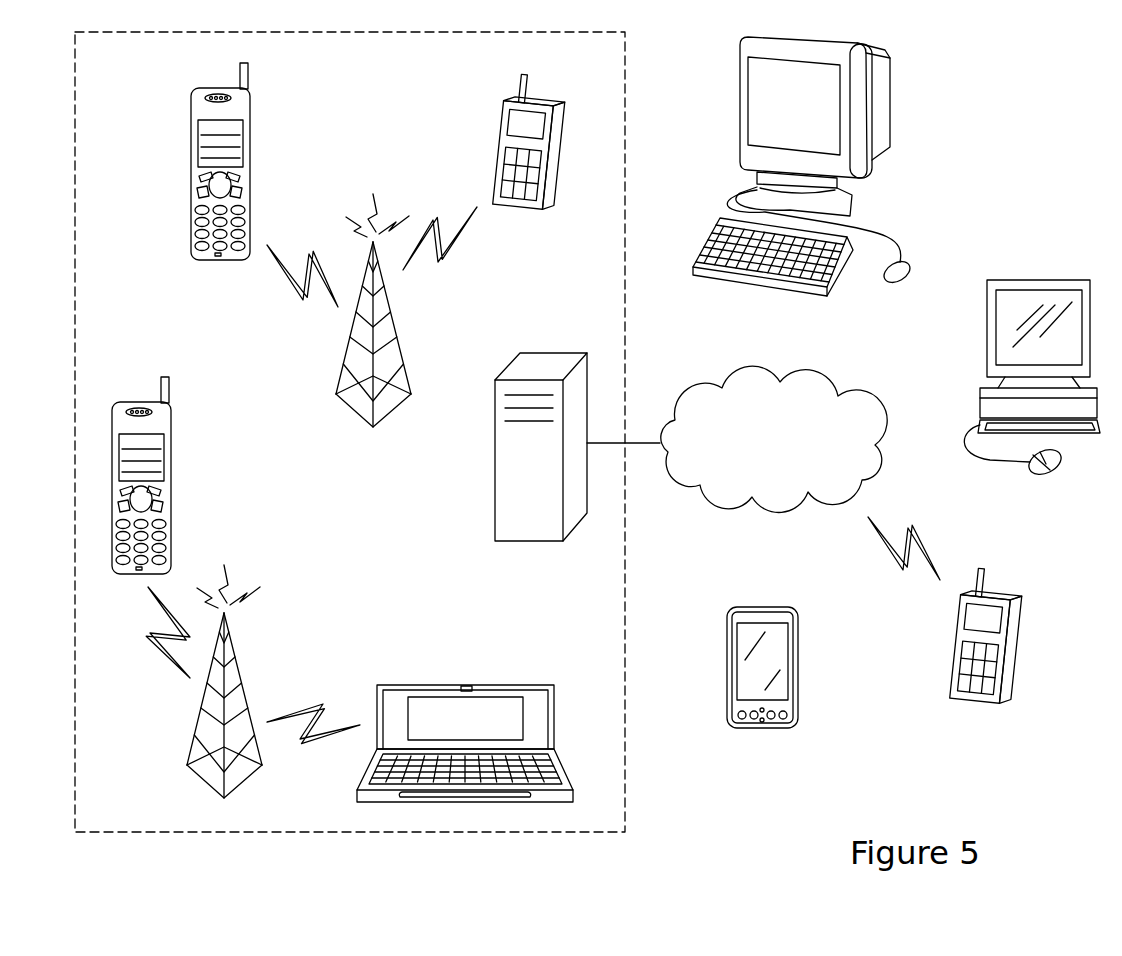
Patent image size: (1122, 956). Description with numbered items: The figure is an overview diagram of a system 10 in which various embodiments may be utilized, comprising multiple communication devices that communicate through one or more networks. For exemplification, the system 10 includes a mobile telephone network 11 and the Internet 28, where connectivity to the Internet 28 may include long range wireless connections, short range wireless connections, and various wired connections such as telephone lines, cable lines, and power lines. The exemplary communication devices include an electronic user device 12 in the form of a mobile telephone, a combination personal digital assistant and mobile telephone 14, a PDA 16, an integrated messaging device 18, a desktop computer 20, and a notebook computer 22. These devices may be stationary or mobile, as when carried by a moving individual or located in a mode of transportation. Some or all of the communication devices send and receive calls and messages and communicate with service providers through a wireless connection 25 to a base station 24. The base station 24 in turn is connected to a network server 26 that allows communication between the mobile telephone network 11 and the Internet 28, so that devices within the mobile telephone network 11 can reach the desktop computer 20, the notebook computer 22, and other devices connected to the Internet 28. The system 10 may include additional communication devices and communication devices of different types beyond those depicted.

The system 10 is at (1083, 550).
The mobile telephone network 11 is at (97, 78).
The electronic user device 12 is at (250, 174).
The combination personal digital assistant (PDA) and mobile telephone 14 is at (468, 686).
The PDA 16 is at (798, 665).
The integrated messaging device (IMD) 18 is at (498, 150).
The desktop computer 20 is at (890, 95).
The notebook computer 22 is at (1040, 278).
The base station 24 is at (392, 317).
The wireless connection 25 is at (166, 660).
The network server 26 is at (495, 462).
The Internet 28 is at (808, 370).